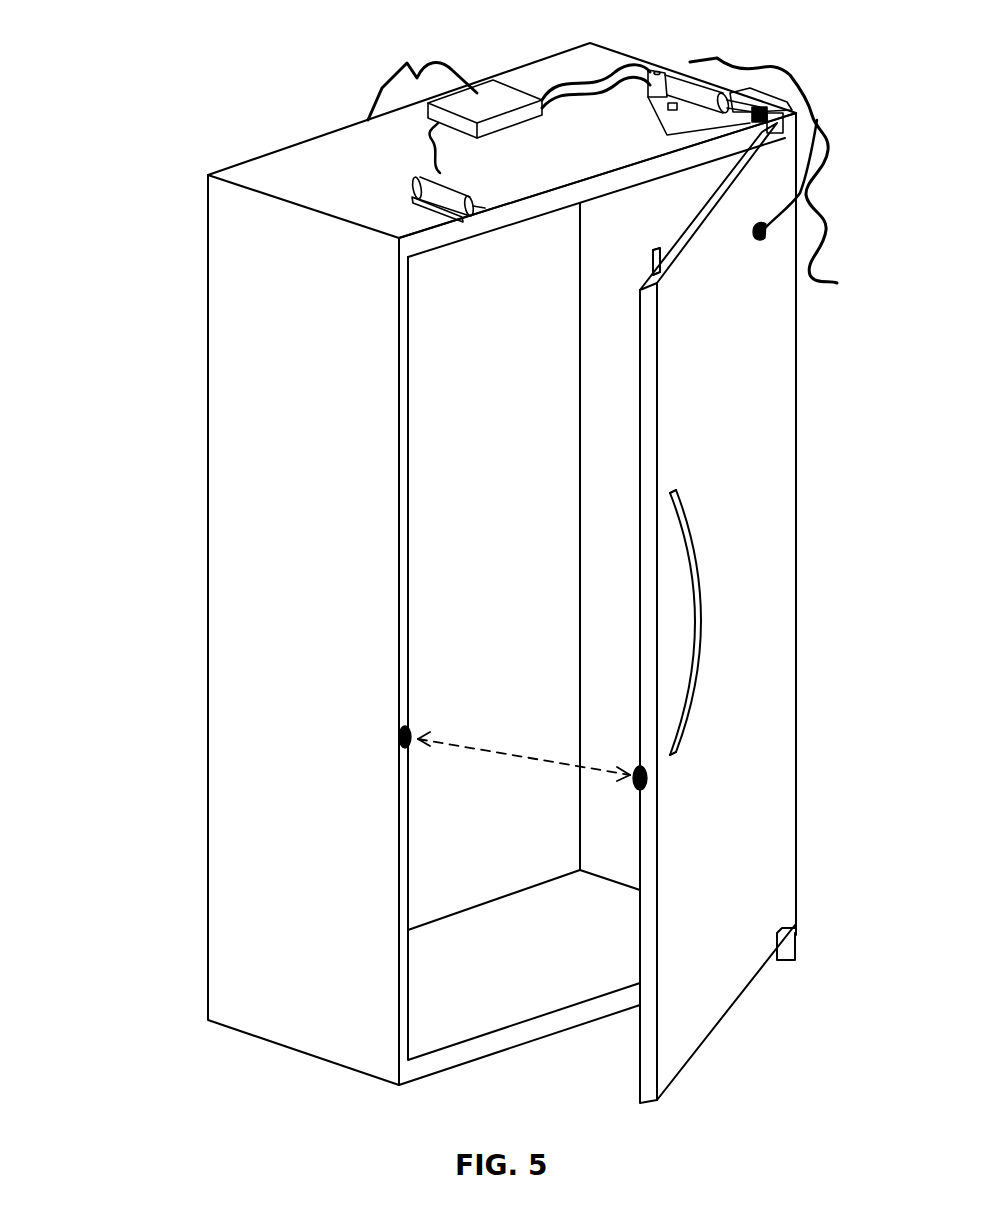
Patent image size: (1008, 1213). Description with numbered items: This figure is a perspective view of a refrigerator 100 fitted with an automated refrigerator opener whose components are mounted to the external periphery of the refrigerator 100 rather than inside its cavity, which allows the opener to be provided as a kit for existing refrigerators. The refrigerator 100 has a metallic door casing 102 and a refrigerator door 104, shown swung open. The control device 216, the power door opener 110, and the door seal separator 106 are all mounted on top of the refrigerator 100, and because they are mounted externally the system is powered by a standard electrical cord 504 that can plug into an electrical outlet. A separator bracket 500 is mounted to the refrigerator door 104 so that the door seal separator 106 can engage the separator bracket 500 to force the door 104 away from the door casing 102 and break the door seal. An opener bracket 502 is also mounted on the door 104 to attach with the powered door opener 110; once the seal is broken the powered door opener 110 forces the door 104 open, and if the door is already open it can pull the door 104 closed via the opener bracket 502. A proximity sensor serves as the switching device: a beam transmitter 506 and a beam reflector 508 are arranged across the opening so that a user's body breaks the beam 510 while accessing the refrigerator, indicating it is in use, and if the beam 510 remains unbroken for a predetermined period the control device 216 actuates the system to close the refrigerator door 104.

The refrigerator 100 is at (243, 378).
The door casing 102 is at (400, 583).
The refrigerator door 104 is at (703, 992).
The door seal separator 106 is at (447, 190).
The power door opener 110 is at (698, 98).
The control device 216 is at (493, 102).
The separator bracket 500 is at (652, 260).
The opener bracket 502 is at (797, 186).
The electrical cord 504 is at (382, 88).
The beam transmitter 506 is at (399, 741).
The beam reflector 508 is at (648, 778).
The beam 510 is at (497, 754).